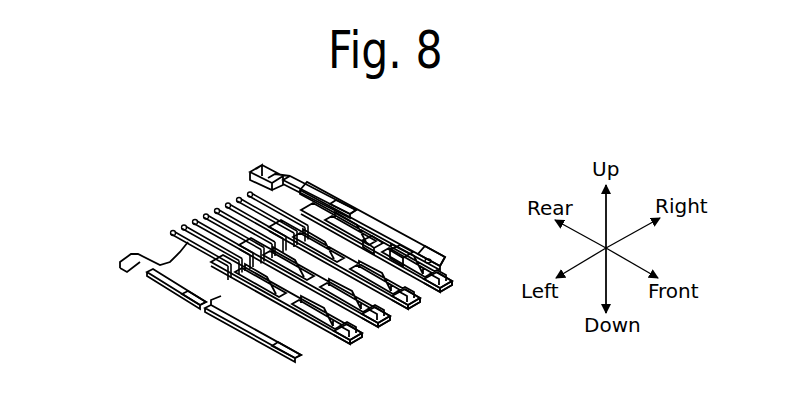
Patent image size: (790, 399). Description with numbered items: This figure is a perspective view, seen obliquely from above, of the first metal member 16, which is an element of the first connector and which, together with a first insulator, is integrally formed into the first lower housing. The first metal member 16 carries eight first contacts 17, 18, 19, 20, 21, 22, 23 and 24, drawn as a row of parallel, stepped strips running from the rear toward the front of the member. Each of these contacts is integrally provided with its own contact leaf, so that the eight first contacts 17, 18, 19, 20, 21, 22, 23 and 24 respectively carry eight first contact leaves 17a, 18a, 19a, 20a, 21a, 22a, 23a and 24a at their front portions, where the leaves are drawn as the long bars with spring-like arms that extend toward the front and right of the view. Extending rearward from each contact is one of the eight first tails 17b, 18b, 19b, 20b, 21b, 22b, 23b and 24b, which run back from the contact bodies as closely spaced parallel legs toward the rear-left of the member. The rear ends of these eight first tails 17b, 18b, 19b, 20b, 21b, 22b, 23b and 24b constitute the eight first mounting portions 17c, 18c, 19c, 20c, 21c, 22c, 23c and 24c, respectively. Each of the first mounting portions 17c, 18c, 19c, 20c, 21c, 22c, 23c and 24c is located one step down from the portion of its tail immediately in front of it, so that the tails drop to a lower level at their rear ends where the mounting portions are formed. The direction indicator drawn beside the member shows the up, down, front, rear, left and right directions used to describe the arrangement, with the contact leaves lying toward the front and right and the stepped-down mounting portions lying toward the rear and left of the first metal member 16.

The first metal member 16 is at (280, 207).
The first contact 17 is at (226, 291).
The first contact leaf 17a is at (348, 334).
The first tail 17b is at (173, 233).
The first mounting portion 17c is at (173, 233).
The first contact 18 is at (247, 255).
The first contact leaf 18a is at (376, 317).
The first tail 18b is at (195, 222).
The first mounting portion 18c is at (195, 222).
The first contact 19 is at (265, 220).
The first contact leaf 19a is at (406, 299).
The first tail 19b is at (217, 211).
The first mounting portion 19c is at (217, 211).
The first contact 20 is at (280, 185).
The first contact leaf 20a is at (438, 282).
The first tail 20b is at (239, 200).
The first mounting portion 20c is at (239, 200).
The first contact 21 is at (150, 259).
The first contact leaf 21a is at (194, 298).
The first tail 21b is at (184, 228).
The first mounting portion 21c is at (184, 227).
The first contact 22 is at (179, 247).
The first contact leaf 22a is at (286, 350).
The first tail 22b is at (206, 216).
The first mounting portion 22c is at (206, 216).
The first contact 23 is at (254, 171).
The first contact leaf 23a is at (431, 256).
The first tail 23b is at (228, 206).
The first mounting portion 23c is at (228, 205).
The first contact 24 is at (241, 132).
The first contact leaf 24a is at (343, 207).
The first tail 24b is at (250, 194).
The first mounting portion 24c is at (250, 194).